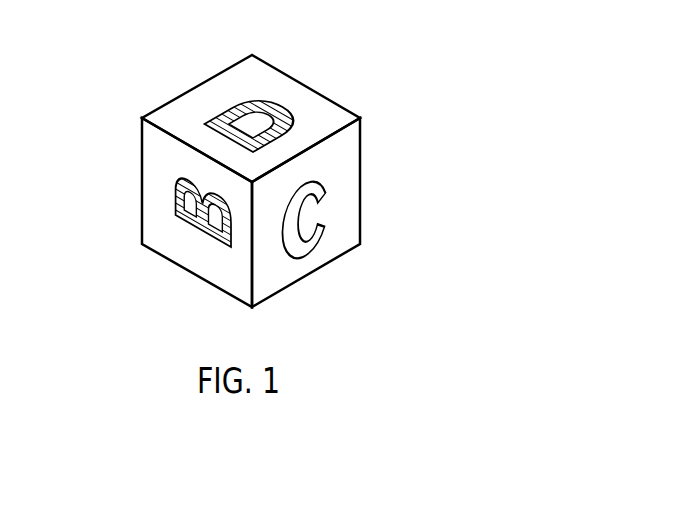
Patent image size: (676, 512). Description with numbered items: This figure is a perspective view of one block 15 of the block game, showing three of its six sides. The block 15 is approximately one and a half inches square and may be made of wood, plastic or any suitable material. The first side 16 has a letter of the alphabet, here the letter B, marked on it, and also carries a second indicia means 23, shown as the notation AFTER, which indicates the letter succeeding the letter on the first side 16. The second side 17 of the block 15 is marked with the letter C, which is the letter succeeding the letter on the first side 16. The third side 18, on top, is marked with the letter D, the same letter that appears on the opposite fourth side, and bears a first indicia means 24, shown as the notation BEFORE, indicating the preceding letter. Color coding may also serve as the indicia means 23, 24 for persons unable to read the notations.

The block 15 is at (257, 184).
The first side 16 is at (146, 215).
The second side 17 is at (350, 224).
The third side 18 is at (242, 118).
The second indicia means 23 is at (142, 182).
The first indicia means 24 is at (199, 86).